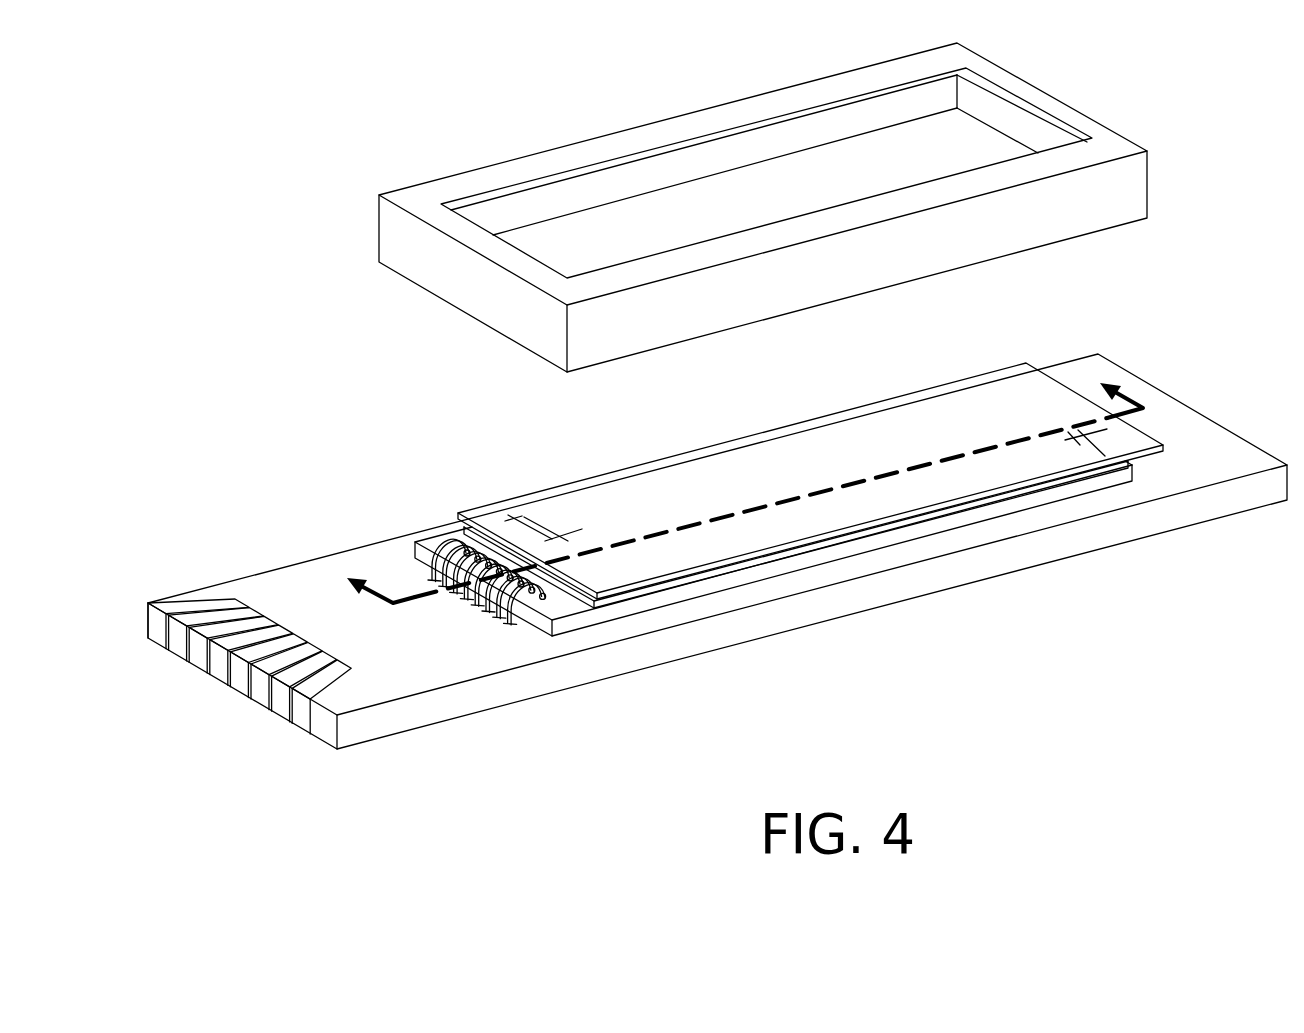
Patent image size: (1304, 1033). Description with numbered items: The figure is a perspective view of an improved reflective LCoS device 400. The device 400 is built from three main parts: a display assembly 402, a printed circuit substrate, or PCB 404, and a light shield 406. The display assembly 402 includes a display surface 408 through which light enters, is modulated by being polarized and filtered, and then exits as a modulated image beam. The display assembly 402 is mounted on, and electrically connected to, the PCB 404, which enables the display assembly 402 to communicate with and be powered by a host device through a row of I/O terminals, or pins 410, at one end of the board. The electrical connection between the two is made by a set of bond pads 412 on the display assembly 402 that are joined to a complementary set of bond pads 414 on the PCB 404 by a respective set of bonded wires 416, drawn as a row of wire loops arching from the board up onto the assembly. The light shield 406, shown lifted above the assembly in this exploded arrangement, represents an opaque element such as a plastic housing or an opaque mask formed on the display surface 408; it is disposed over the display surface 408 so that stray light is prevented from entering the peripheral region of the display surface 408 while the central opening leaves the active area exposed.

The reflective LCoS device 400 is at (208, 174).
The display assembly 402 is at (537, 420).
The printed circuit substrate (PCB) 404 is at (481, 700).
The light shield 406 is at (877, 270).
The display surface 408 is at (838, 445).
The I/O terminals (pins) 410 is at (292, 640).
The bond pads 412 is at (545, 603).
The bond pads 414 is at (432, 573).
The bonded wires 416 is at (445, 546).